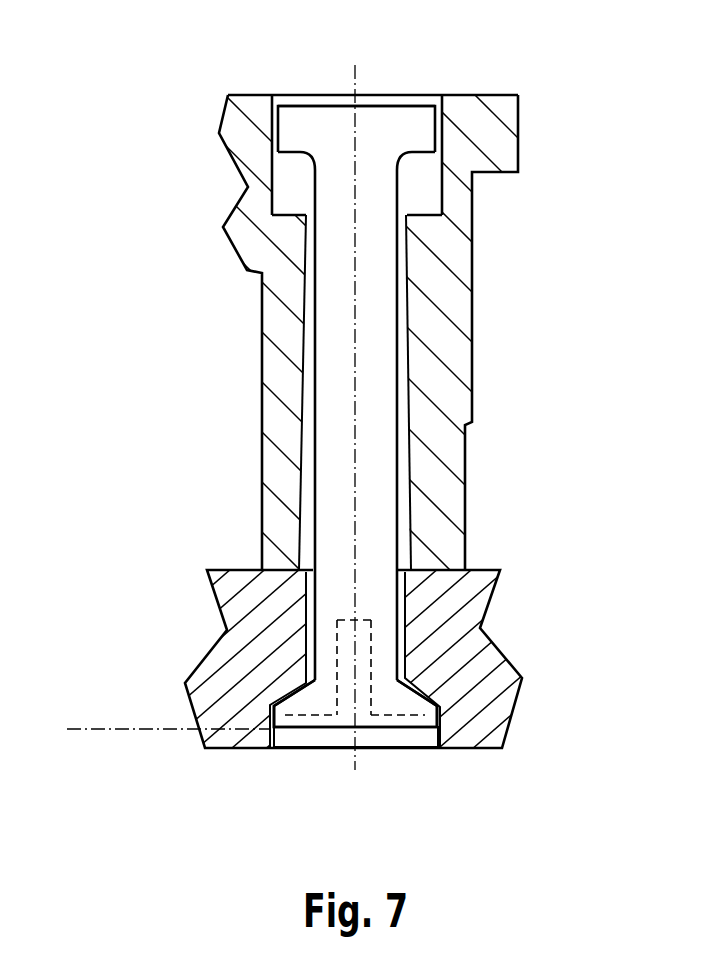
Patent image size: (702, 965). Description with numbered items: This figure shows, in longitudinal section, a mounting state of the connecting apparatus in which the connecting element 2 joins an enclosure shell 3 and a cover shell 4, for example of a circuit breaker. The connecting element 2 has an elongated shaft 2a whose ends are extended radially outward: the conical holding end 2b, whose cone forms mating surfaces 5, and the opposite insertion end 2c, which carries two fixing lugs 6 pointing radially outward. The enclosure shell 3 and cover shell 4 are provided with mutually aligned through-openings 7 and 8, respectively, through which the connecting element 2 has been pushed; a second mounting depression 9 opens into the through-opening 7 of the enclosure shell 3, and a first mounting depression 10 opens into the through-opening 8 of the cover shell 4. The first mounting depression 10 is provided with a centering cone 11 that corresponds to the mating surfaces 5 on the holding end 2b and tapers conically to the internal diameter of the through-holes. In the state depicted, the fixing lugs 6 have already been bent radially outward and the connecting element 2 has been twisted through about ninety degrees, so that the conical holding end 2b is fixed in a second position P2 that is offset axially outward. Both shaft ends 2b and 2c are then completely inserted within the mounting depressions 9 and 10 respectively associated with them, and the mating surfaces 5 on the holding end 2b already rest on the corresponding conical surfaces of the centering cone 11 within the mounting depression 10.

The connecting element 2 is at (264, 425).
The shaft 2a is at (340, 470).
The holding end 2b is at (397, 750).
The insertion end 2c is at (380, 128).
The enclosure shell 3 is at (452, 352).
The cover shell 4 is at (435, 675).
The mating surfaces 5 is at (295, 685).
The fixing lugs 6 is at (288, 128).
The through-opening 7 is at (400, 467).
The through-opening 8 is at (307, 616).
The second mounting depression 9 is at (417, 180).
The first mounting depression 10 is at (298, 750).
The centering cone 11 is at (295, 685).
The second position P2 is at (128, 728).